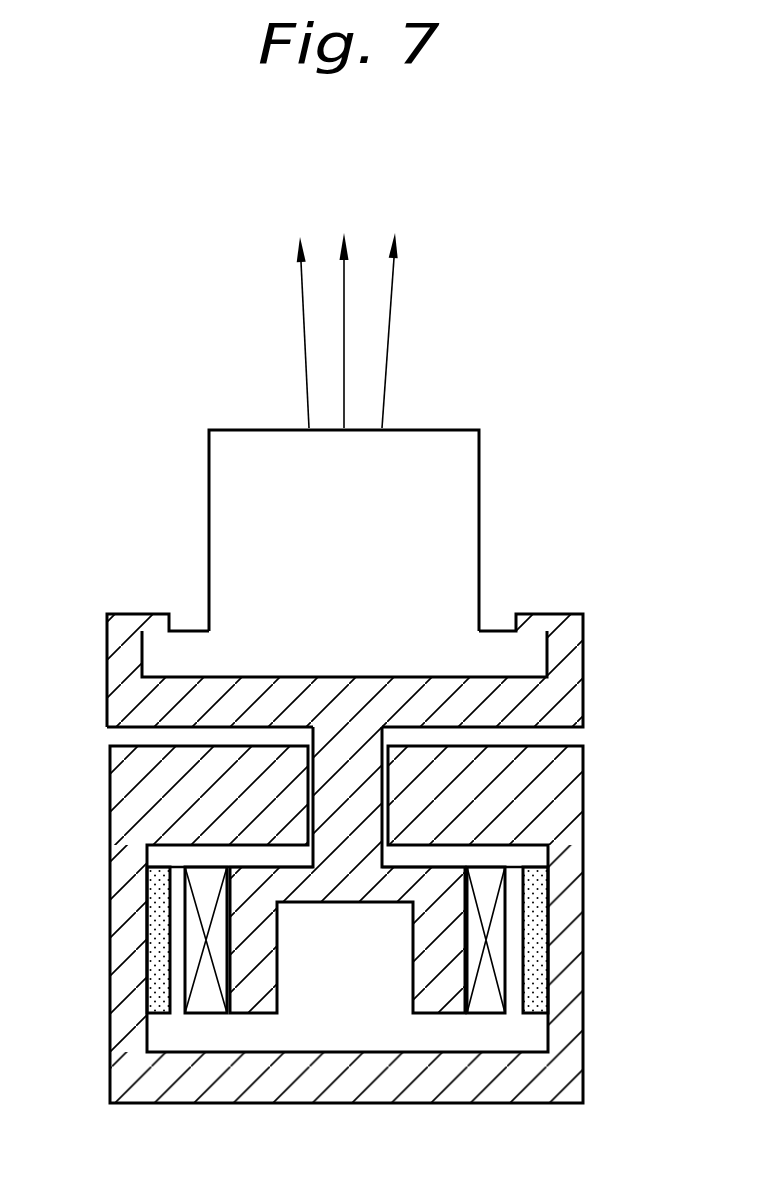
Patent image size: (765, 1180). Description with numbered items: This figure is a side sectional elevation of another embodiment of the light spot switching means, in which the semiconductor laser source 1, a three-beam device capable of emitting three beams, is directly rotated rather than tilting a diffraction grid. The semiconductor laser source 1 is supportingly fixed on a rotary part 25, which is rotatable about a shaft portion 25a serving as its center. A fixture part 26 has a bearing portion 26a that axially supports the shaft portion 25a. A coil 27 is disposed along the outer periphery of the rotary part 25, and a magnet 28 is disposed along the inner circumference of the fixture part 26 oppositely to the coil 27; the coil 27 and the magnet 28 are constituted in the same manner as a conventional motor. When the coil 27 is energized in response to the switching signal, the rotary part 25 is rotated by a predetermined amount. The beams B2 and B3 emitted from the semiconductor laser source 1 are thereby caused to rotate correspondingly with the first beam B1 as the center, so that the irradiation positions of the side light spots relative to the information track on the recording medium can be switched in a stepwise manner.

The semiconductor laser source 1 is at (479, 487).
The first beam B1 is at (344, 262).
The beam B2 is at (301, 305).
The beam B3 is at (394, 272).
The rotary part 25 is at (583, 677).
The shaft portion 25a is at (358, 797).
The fixture part 26 is at (347, 924).
The bearing portion 26a is at (322, 795).
The coil 27 is at (490, 1013).
The magnet 28 is at (535, 1013).